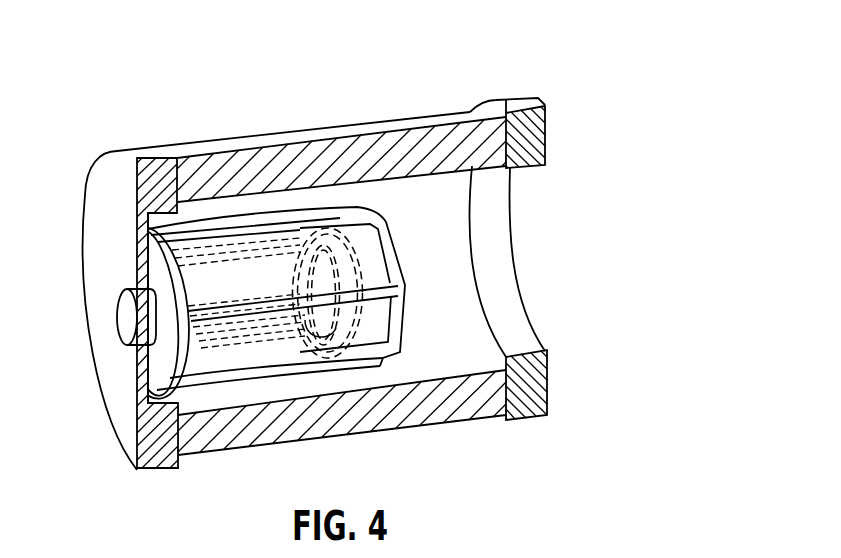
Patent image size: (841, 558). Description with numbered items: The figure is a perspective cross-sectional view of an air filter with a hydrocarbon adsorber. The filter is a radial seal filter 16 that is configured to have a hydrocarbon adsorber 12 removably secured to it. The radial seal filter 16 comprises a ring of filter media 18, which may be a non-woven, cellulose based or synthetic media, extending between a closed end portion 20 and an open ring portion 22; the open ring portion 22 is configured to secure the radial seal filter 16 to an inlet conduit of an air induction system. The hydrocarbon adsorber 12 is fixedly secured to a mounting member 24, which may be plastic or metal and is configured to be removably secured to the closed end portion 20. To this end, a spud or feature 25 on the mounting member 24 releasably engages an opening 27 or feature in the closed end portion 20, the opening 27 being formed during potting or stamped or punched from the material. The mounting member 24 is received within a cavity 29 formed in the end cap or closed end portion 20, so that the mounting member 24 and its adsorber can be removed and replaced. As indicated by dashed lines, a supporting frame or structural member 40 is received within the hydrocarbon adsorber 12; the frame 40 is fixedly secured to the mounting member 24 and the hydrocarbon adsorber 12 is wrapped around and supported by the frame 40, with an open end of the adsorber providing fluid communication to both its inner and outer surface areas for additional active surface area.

The radial seal filter 16 is at (473, 85).
The ring of filter media 18 is at (495, 390).
The open ring portion 22 is at (527, 374).
The closed end portion 20 is at (172, 444).
The spud or feature 25 is at (122, 293).
The opening 27 is at (137, 352).
The cavity 29 is at (147, 402).
The mounting member 24 is at (178, 288).
The hydrocarbon adsorber 12 is at (260, 279).
The supporting frame or structural member 40 is at (327, 223).